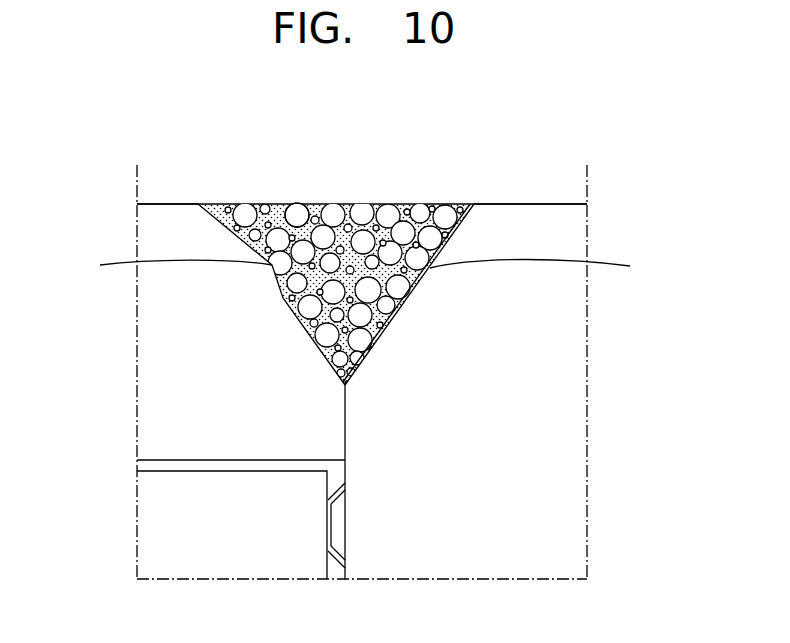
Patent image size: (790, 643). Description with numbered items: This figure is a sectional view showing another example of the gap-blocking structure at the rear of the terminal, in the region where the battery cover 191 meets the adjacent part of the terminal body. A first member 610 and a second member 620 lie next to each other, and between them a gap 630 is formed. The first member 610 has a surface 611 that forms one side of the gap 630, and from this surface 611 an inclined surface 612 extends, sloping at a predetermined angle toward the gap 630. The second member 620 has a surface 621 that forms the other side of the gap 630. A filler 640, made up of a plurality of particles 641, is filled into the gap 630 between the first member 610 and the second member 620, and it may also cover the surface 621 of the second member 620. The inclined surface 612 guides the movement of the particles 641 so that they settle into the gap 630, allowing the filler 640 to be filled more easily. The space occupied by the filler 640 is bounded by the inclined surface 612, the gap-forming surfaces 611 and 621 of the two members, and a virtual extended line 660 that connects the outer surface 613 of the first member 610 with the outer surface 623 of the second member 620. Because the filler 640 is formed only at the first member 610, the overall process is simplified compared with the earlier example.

The battery cover 191 is at (150, 520).
The first member 610 is at (152, 352).
The surface 611 is at (171, 264).
The inclined surface 612 is at (215, 212).
The outer surface 613 is at (162, 203).
The second member 620 is at (576, 348).
The surface 621 is at (544, 267).
The outer surface 623 is at (562, 203).
The gap 630 is at (466, 210).
The filler 640 is at (375, 200).
The particles 641 is at (299, 214).
The virtual extended line 660 is at (256, 212).